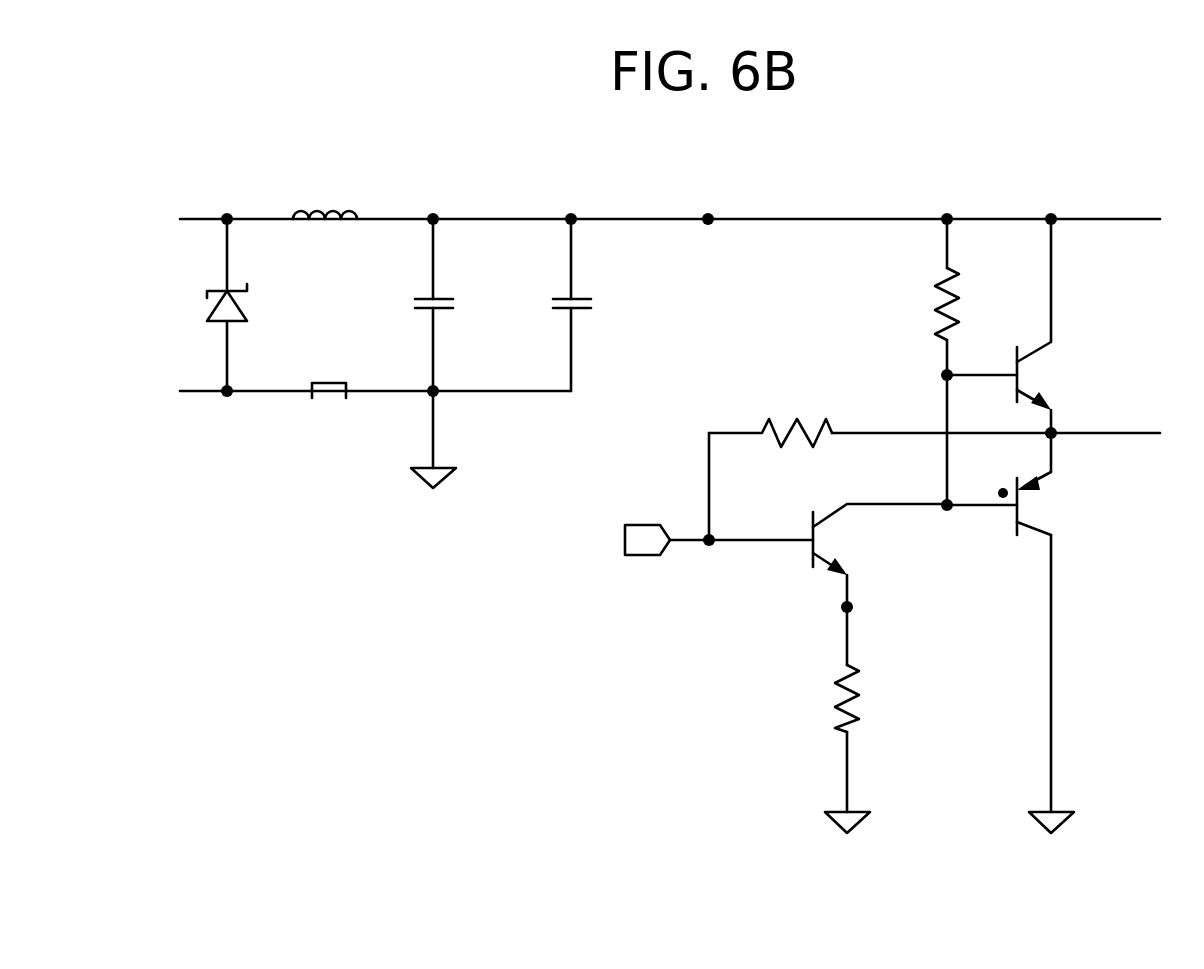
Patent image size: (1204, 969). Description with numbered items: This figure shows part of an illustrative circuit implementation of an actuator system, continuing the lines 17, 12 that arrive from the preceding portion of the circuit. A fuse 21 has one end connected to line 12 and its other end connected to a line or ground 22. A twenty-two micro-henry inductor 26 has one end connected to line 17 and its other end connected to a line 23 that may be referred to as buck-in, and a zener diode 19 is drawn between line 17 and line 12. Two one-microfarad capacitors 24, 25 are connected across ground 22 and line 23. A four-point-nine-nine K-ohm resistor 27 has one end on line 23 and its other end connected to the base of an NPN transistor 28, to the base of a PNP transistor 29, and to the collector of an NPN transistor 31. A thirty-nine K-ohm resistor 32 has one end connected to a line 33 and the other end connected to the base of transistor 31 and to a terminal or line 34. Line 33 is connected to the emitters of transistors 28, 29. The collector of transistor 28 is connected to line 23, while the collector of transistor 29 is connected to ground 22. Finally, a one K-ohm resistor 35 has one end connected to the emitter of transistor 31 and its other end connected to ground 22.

The line 12 is at (195, 393).
The line 17 is at (197, 218).
The zener diode 19 is at (243, 300).
The fuse 21 is at (328, 398).
The ground 22 is at (383, 390).
The line 23 is at (499, 218).
The capacitor 24 is at (422, 298).
The capacitor 25 is at (560, 298).
The inductor 26 is at (318, 222).
The resistor 27 is at (962, 291).
The NPN transistor 28 is at (1040, 372).
The PNP transistor 29 is at (1040, 505).
The NPN transistor 31 is at (811, 554).
The resistor 32 is at (791, 446).
The line 33 is at (1145, 431).
The terminal or line 34 is at (686, 544).
The resistor 35 is at (831, 692).